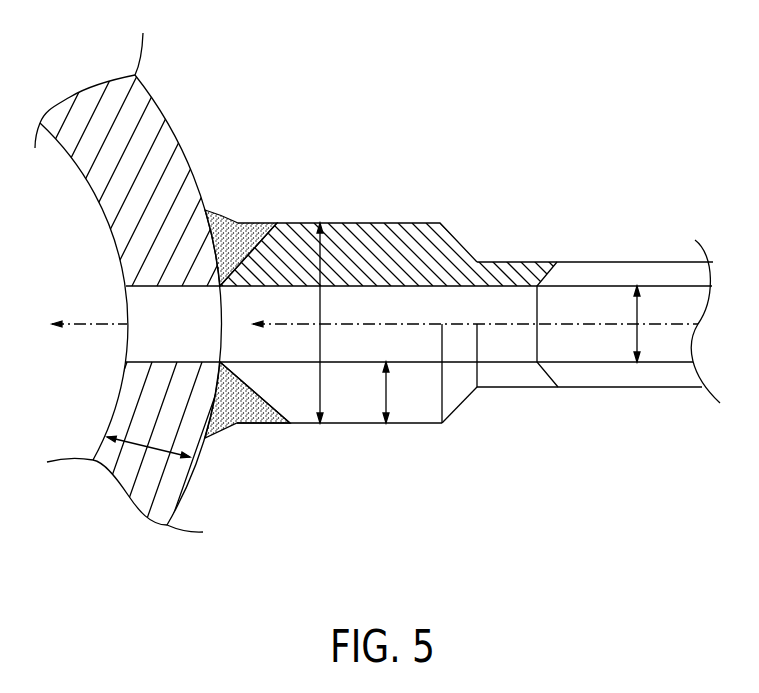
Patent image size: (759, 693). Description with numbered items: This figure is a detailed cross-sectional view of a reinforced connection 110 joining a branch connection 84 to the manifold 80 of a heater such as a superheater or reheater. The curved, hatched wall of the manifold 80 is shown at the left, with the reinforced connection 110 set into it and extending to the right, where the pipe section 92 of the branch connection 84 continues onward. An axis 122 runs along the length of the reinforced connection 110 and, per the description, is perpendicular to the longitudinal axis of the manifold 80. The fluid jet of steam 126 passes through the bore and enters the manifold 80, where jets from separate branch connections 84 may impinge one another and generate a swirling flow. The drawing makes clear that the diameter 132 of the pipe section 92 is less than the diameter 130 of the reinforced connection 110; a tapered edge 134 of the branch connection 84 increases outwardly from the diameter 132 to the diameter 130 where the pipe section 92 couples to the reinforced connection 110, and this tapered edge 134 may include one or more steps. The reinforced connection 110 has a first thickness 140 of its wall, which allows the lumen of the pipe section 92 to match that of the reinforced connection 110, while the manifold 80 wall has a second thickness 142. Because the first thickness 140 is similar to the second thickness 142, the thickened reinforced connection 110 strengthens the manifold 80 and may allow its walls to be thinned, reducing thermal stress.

The manifold 80 is at (173, 128).
The reinforced connection 110 is at (254, 222).
The branch connection 84 is at (598, 219).
The pipe section 92 is at (572, 286).
The fluid jet of steam 126 is at (96, 323).
The second thickness 142 is at (157, 450).
The diameter of the reinforced connection 130 is at (322, 388).
The first thickness 140 is at (388, 393).
The tapered edge 134 is at (460, 405).
The axis 122 is at (596, 326).
The diameter of the pipe section 132 is at (640, 335).